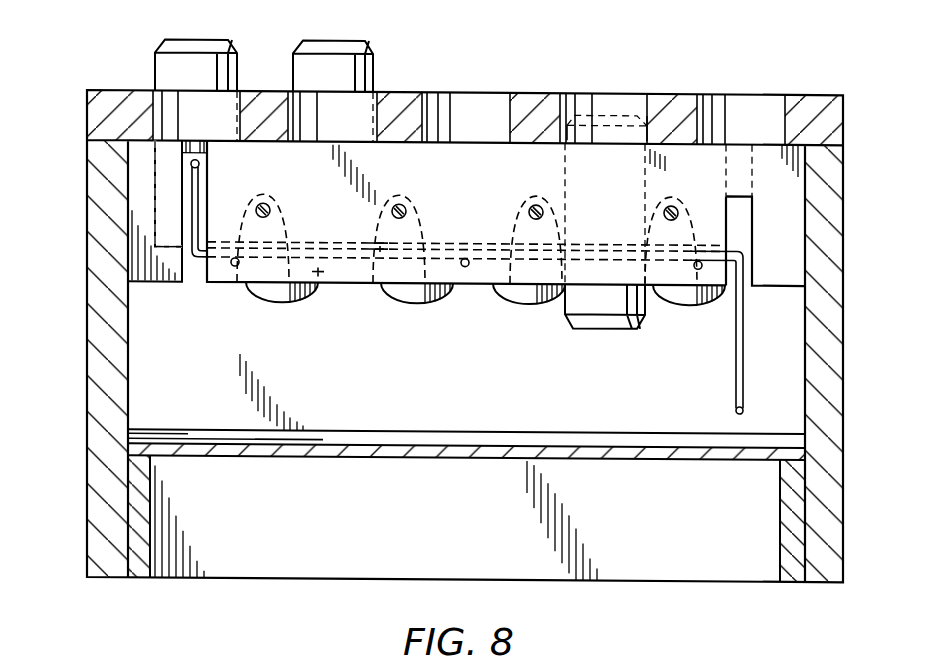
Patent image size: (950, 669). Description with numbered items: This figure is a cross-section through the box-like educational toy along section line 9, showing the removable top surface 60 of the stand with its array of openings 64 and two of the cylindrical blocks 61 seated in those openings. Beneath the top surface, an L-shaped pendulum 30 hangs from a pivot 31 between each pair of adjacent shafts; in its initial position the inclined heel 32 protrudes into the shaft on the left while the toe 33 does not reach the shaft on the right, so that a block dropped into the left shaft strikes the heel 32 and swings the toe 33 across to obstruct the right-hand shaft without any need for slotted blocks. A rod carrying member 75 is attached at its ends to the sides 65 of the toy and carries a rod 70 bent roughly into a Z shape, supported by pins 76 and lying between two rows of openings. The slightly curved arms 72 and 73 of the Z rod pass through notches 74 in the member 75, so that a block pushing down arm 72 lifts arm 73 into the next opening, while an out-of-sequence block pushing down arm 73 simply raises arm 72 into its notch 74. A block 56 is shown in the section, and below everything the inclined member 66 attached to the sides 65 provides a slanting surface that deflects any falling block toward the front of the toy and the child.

The section line 9- 9 is at (748, 52).
The L-shaped pendulum 30 is at (690, 299).
The pivot 31 is at (669, 198).
The heel 32 is at (668, 288).
The toe 33 is at (694, 288).
The connector block 56 is at (620, 313).
The top surface 60 is at (830, 102).
The cylindrical blocks 61 is at (357, 15).
The openings 64 is at (455, 87).
The sides 65 is at (830, 300).
The inclined member 66 is at (362, 428).
The Z rod 70 is at (455, 250).
The arm 72 is at (744, 375).
The arm 73 is at (197, 206).
The notch 74 is at (190, 291).
The rod carrying member 75 is at (790, 213).
The pins 76 is at (463, 265).